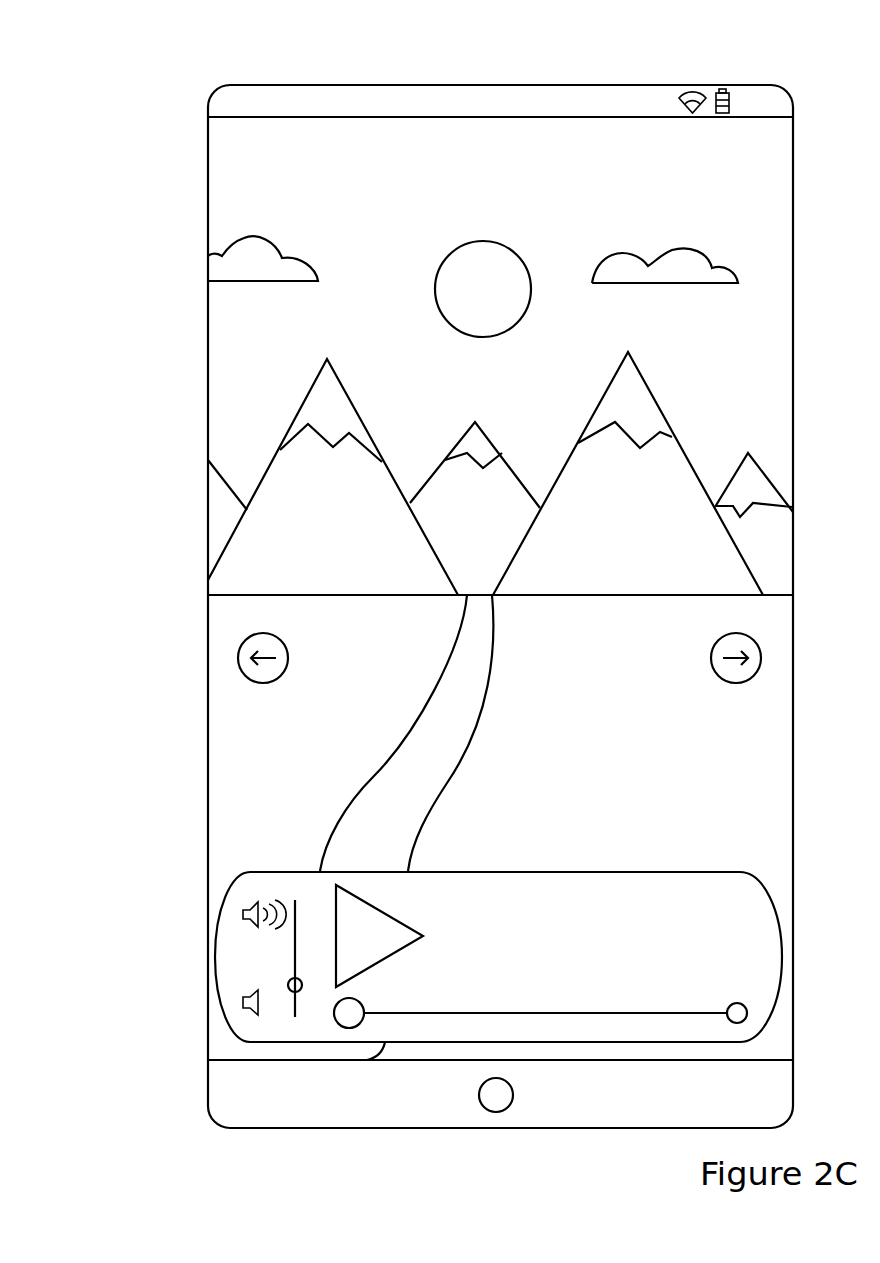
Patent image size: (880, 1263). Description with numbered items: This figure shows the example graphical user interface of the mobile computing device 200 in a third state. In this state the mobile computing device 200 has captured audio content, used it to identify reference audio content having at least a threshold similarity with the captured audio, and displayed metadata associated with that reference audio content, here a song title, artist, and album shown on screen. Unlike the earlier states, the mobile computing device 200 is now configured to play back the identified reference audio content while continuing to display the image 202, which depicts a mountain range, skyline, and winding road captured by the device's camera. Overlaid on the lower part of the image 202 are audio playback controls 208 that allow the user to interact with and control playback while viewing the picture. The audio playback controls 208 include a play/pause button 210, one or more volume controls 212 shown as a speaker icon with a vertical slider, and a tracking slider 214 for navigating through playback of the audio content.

The mobile computing device 200 is at (746, 63).
The image 202 is at (222, 345).
The audio playback controls 208 is at (240, 900).
The play/pause button 210 is at (363, 937).
The volume controls 212 is at (290, 990).
The tracking slider 214 is at (528, 1017).